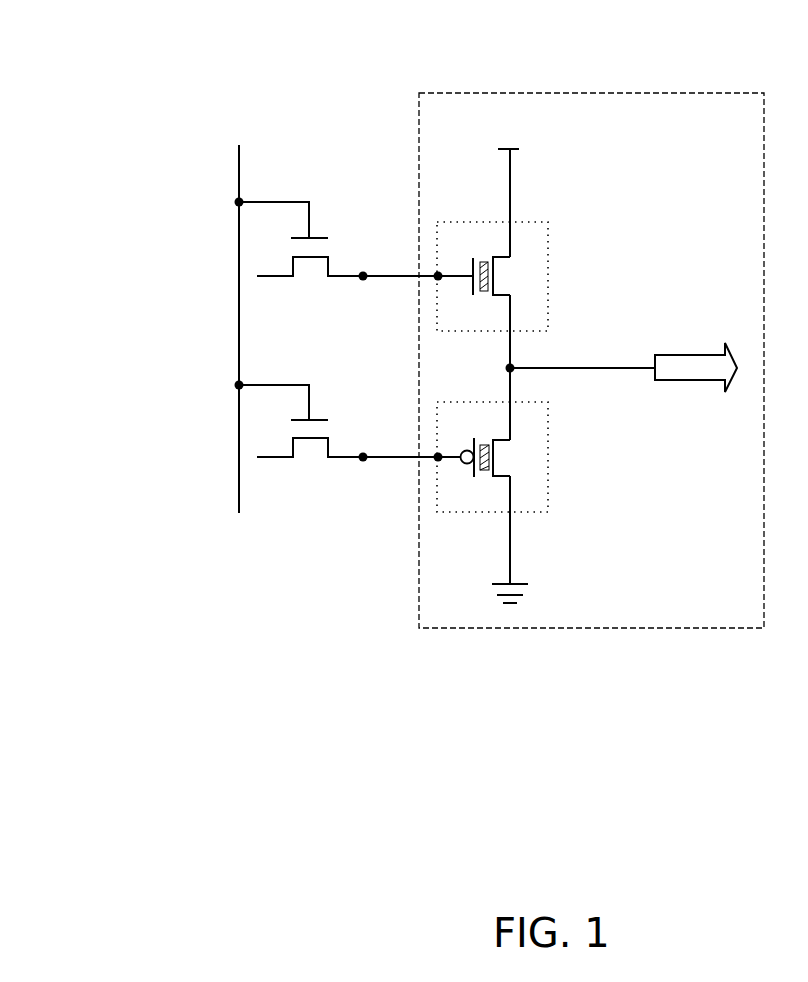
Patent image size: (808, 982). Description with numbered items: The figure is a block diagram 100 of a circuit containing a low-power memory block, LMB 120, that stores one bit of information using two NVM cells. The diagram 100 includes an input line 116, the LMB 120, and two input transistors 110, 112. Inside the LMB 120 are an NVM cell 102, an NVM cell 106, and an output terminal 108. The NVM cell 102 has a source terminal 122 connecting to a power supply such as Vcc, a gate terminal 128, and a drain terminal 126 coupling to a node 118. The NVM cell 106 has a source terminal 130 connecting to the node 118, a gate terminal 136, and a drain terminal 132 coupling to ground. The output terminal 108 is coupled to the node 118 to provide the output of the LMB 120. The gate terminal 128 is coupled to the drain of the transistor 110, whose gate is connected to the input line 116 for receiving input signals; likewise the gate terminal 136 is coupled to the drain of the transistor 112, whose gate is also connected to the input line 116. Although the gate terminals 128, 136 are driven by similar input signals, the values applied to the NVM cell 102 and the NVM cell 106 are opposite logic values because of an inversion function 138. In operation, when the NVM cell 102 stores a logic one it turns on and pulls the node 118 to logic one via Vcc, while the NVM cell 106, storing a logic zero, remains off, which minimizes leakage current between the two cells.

The block diagram 100 is at (165, 68).
The NVM cell 102 is at (549, 257).
The NVM cell 106 is at (499, 495).
The output terminal 108 is at (686, 352).
The input transistor 110 is at (355, 245).
The input transistor 112 is at (300, 477).
The input line 116 is at (237, 340).
The node 118 is at (508, 366).
The low-power memory block (LMB) 120 is at (635, 93).
The source terminal 122 is at (508, 215).
The drain terminal 126 is at (514, 352).
The gate terminal 128 is at (410, 280).
The source line of second NVM cell 130 is at (514, 382).
The drain terminal 132 is at (508, 522).
The gate terminal 136 is at (409, 453).
The inversion function 138 is at (465, 470).